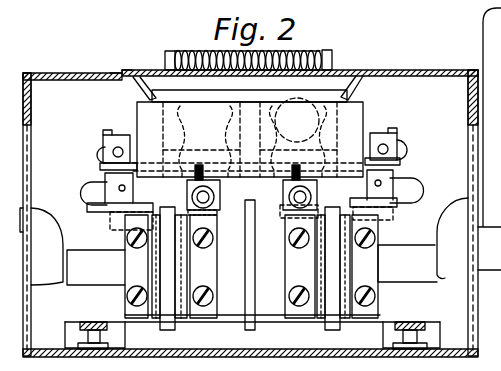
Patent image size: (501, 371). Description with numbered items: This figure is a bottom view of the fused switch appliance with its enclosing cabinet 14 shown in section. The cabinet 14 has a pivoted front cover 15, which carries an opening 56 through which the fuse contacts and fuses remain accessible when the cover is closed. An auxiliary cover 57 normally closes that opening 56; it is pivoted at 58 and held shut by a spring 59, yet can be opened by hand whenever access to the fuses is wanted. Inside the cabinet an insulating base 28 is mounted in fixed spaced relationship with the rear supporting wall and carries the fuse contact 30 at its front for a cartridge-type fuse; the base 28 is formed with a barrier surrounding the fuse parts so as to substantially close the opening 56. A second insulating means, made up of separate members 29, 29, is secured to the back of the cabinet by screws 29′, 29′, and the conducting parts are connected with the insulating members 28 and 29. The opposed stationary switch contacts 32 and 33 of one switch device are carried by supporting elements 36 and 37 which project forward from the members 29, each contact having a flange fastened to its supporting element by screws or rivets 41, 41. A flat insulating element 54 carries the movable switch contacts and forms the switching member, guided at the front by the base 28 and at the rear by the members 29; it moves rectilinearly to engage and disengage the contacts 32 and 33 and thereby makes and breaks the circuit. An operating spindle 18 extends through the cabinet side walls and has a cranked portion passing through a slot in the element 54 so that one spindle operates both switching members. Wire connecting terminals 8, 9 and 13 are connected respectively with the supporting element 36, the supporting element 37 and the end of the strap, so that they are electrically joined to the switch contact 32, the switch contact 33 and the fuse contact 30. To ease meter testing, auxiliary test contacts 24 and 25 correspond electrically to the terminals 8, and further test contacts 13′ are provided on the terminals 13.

The wire connecting terminal 8 is at (186, 203).
The wire connecting terminal 9 is at (80, 192).
The wire connecting terminal 13 is at (100, 152).
The test contact 13′ is at (112, 135).
The cabinet 14 is at (480, 270).
The front cover 15 is at (452, 72).
The operating spindle 18 is at (437, 268).
The auxiliary test contact 24 is at (222, 192).
The auxiliary test contact 25 is at (105, 180).
The insulating base 28 is at (140, 115).
The insulating member 29 is at (68, 322).
The screw 29′ is at (92, 322).
The fuse contact 30 is at (320, 130).
The stationary switch contact 32 is at (218, 252).
The stationary switch contact 33 is at (125, 238).
The supporting element 36 is at (288, 208).
The supporting element 37 is at (382, 212).
The screw or rivet 41 is at (288, 298).
The flat insulating element 54 is at (330, 322).
The opening in cover 56 is at (360, 86).
The auxiliary cover 57 is at (122, 70).
The pivot 58 is at (334, 58).
The spring 59 is at (318, 52).